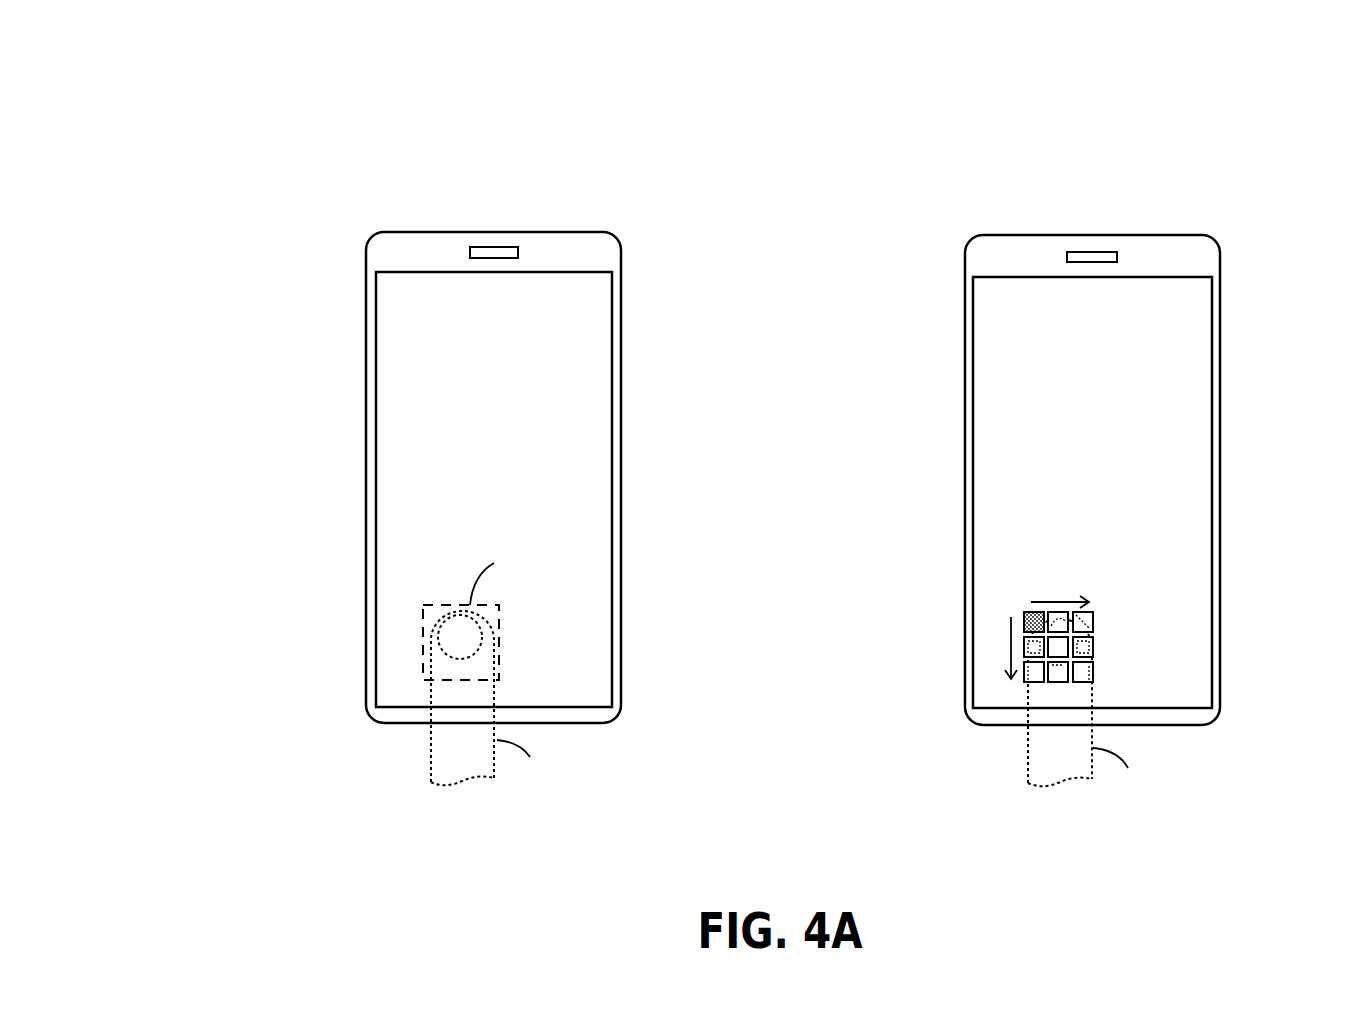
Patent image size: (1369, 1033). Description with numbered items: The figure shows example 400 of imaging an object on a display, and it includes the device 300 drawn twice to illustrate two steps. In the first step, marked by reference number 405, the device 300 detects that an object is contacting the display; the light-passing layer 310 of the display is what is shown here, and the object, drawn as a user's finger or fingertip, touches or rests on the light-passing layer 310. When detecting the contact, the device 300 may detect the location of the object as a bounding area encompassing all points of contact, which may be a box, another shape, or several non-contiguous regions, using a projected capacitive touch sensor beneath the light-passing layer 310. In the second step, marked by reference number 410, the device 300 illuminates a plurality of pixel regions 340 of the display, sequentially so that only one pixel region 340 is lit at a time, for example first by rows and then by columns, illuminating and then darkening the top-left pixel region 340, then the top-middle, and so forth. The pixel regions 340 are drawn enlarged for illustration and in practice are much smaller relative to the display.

The example 400 is at (238, 55).
The detecting that an object is contacting the display 405 is at (603, 169).
The illuminating a plurality of pixel regions 410 is at (1211, 169).
The device 300 is at (349, 317).
The light-passing layer 310 is at (403, 430).
The pixel regions 340 is at (1096, 615).